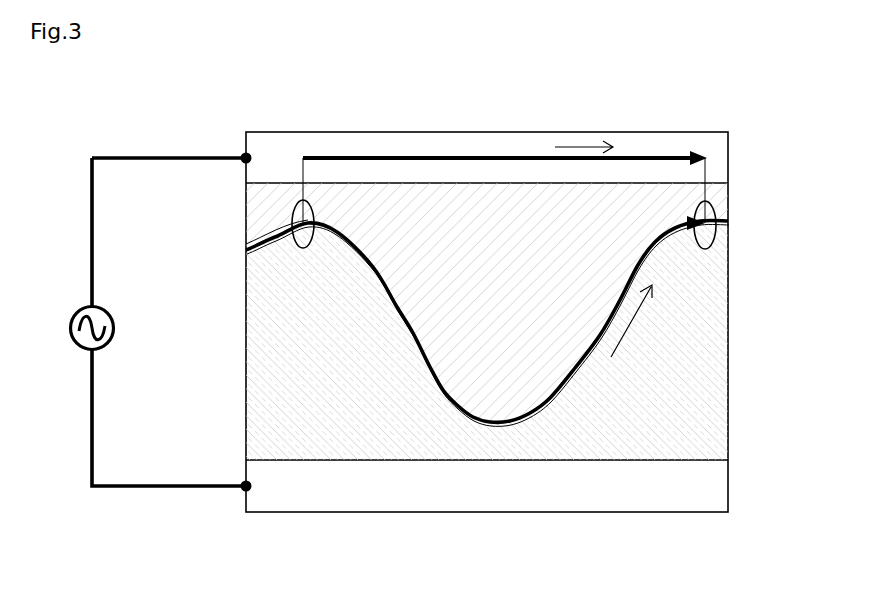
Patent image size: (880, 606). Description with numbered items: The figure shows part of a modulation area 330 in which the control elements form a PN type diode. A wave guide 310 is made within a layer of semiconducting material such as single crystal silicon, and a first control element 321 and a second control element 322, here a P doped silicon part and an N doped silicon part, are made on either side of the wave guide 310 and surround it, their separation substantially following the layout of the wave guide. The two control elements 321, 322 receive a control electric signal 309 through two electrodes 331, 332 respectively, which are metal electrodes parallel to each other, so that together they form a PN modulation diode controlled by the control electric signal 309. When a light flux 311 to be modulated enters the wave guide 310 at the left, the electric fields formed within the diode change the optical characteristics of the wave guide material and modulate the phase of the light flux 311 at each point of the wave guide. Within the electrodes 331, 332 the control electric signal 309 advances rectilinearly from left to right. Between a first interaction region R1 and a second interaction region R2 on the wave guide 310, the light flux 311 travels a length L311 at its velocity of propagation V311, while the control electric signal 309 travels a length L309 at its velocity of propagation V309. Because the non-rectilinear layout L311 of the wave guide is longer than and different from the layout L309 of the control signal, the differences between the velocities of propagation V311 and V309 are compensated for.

The control electric signal 309 is at (74, 313).
The wave guide 310 is at (273, 238).
The light flux 311 is at (247, 229).
The first control element 321 is at (262, 208).
The second control element 322 is at (273, 341).
The modulation area 330 is at (728, 516).
The electrode 331 is at (256, 146).
The electrode 332 is at (262, 470).
The first interaction region R1 is at (290, 203).
The second interaction region R2 is at (712, 207).
The layout of the control signal L309 is at (516, 157).
The velocity of propagation of the control signal V309 is at (593, 144).
The non-rectilinear layout of the wave guide L311 is at (662, 244).
The velocity of propagation of the light flux V311 is at (640, 331).